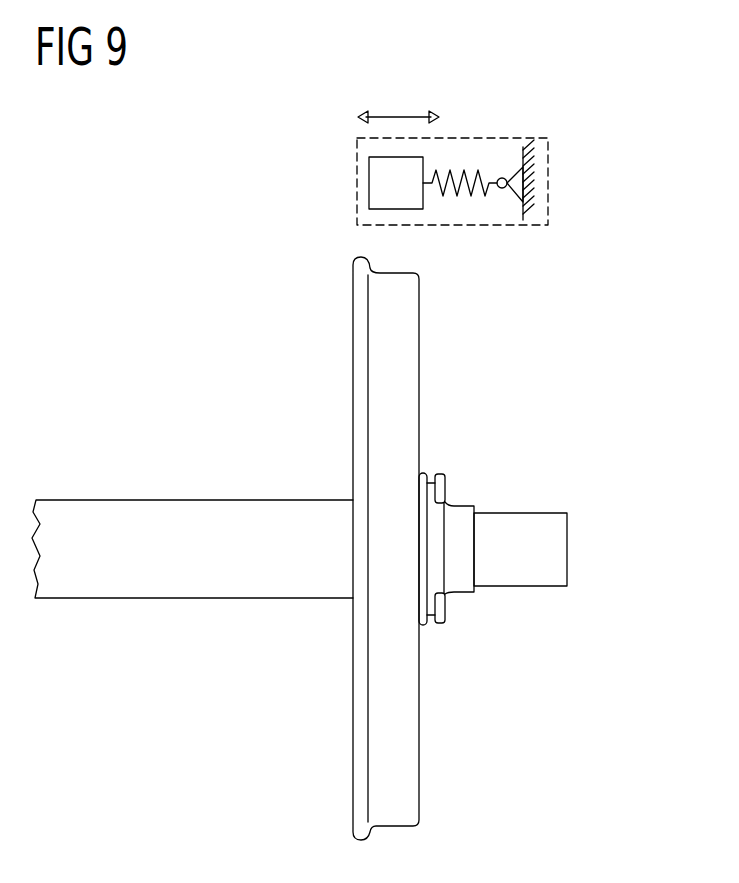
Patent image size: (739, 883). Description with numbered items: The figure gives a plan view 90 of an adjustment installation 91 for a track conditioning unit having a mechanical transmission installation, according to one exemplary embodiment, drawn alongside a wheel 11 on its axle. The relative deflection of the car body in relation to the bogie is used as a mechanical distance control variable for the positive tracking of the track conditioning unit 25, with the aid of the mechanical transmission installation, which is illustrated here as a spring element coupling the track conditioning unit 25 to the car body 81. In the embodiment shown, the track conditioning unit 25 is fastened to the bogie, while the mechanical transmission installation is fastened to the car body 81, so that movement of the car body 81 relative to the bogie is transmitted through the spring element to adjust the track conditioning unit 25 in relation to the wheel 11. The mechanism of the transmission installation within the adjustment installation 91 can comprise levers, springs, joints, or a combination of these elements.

The wheel 11 is at (419, 385).
The track conditioning unit 25 is at (369, 172).
The car body 81 is at (527, 210).
The plan view 90 is at (464, 142).
The adjustment installation 91 is at (548, 143).